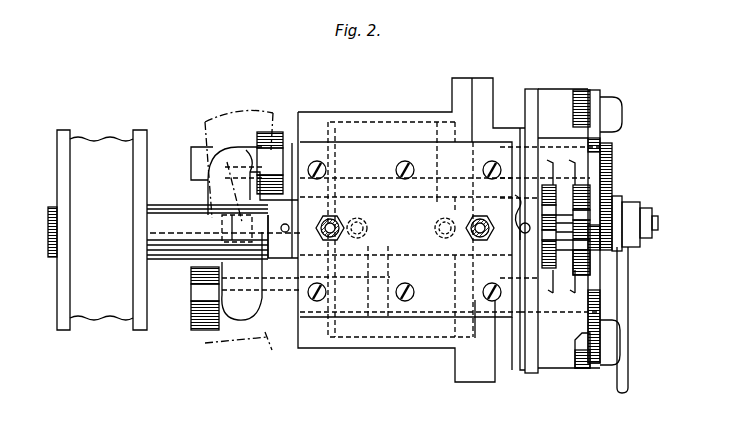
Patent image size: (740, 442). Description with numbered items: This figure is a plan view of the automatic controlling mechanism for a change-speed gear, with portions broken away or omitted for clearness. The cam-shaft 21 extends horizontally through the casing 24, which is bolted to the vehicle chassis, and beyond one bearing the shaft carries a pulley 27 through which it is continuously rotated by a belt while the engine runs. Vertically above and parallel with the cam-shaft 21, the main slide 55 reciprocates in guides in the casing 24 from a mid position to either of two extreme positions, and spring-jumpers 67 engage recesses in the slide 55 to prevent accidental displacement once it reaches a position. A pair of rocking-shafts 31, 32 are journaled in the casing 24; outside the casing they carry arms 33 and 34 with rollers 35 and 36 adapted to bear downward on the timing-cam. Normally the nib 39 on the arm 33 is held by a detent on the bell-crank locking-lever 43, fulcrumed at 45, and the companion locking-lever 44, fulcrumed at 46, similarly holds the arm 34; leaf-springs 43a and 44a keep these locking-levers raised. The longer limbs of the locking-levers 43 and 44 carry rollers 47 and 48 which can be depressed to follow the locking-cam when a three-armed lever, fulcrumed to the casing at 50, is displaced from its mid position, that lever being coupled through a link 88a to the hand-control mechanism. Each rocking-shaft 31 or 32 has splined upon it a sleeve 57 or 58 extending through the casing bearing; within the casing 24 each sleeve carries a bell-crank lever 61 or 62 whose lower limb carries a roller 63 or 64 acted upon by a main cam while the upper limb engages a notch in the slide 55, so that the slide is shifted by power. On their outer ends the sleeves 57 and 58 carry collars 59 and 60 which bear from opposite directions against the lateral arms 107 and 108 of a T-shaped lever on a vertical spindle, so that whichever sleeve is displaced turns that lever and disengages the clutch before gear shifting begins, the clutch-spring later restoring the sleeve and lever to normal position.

The pulley 27 is at (93, 134).
The cam-shaft 21 is at (173, 205).
The lateral arm of T-shaped lever 108 is at (227, 150).
The collar 60 is at (272, 131).
The sleeve 58 is at (294, 131).
The casing 24 is at (360, 111).
The spring-jumpers 67 is at (407, 231).
The roller 63 is at (366, 222).
The roller 64 is at (445, 238).
The bell-crank lever 62 is at (443, 205).
The bell-crank lever 61 is at (365, 252).
The rocking-shaft 32 is at (521, 140).
The roller 36 is at (548, 185).
The leaf-spring 44a is at (598, 65).
The bell-crank locking-lever 44 is at (597, 143).
The fulcrum 46 is at (612, 112).
The nib 39 is at (613, 160).
The arm 34 is at (563, 190).
The roller 48 is at (580, 204).
The fulcrum 50 is at (650, 222).
The roller 47 is at (584, 253).
The arm 33 is at (563, 272).
The bell-crank locking-lever 43 is at (597, 320).
The fulcrum 45 is at (607, 338).
The link 88a is at (626, 375).
The leaf-spring 43a is at (585, 368).
The roller 35 is at (550, 270).
The rocking-shaft 31 is at (521, 318).
The collar 59 is at (200, 330).
The lateral arm of T-shaped lever 107 is at (237, 305).
The sleeve 57 is at (256, 322).
The main slide 55 is at (285, 262).